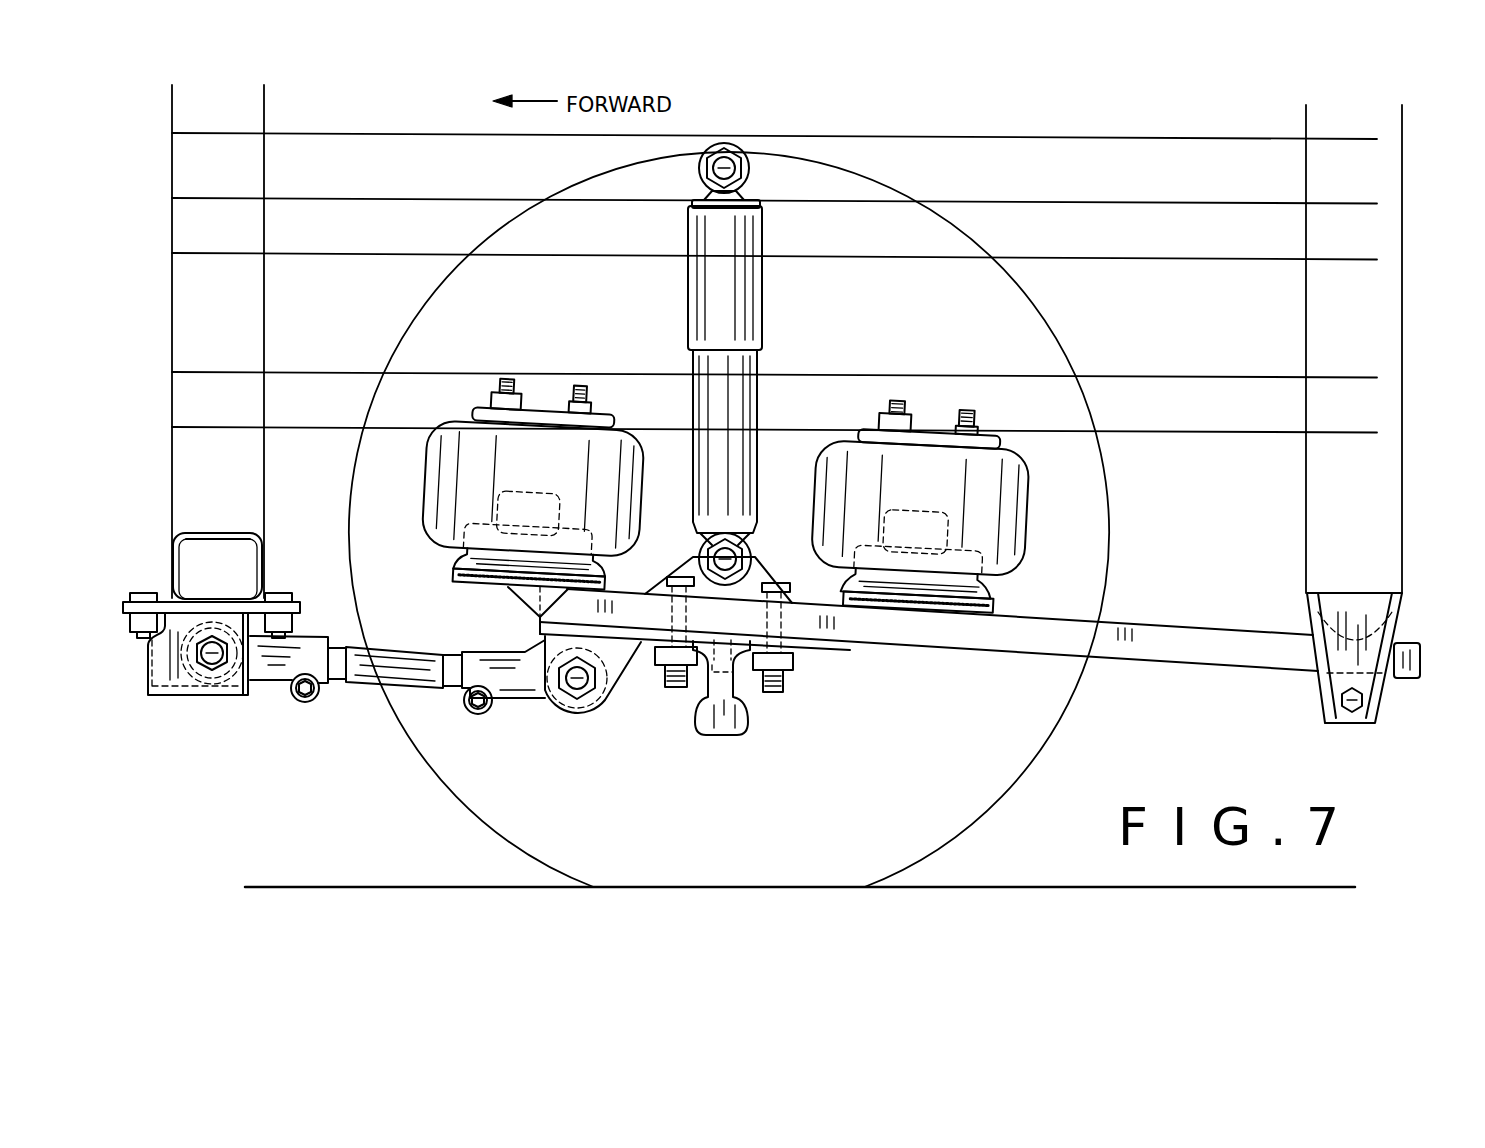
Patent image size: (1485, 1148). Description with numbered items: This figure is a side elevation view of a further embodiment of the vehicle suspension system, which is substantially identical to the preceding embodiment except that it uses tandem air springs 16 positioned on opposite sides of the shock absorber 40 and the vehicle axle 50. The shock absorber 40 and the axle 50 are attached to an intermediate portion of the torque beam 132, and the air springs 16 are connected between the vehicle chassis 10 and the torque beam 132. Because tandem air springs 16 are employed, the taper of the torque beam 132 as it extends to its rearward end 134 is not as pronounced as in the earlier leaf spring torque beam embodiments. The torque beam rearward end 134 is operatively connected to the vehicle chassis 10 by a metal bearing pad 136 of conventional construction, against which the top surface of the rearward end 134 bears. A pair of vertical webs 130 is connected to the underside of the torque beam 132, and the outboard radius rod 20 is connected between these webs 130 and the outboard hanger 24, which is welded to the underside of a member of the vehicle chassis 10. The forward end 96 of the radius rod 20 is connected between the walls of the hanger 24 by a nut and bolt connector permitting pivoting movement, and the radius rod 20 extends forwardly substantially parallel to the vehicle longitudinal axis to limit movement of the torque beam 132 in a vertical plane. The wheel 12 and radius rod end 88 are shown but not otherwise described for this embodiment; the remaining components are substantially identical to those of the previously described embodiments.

The vehicle chassis 10 is at (930, 170).
The wheel 12 is at (590, 180).
The air spring 16 is at (450, 455).
The outboard radius rod 20 is at (418, 682).
The outboard hanger 24 is at (167, 670).
The shock absorber 40 is at (738, 310).
The vehicle axle 50 is at (738, 712).
The torque rod end 88 is at (533, 703).
The forward end of the outboard radius rod 96 is at (263, 660).
The vertical webs 130 is at (618, 655).
The torque beam 132 is at (1017, 662).
The rearward end of the torque beam 134 is at (1410, 688).
The metal bearing pad 136 is at (1408, 640).